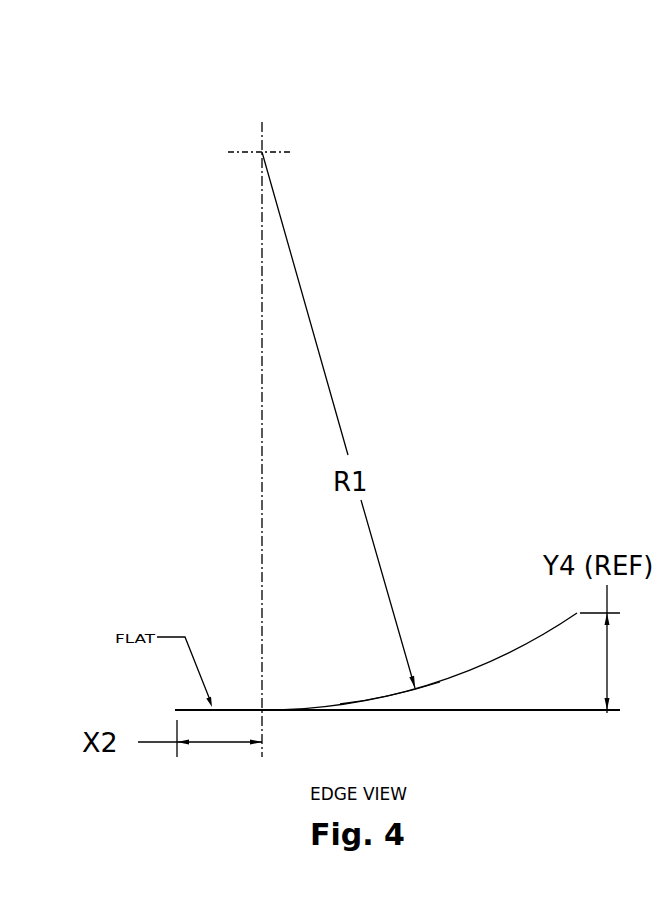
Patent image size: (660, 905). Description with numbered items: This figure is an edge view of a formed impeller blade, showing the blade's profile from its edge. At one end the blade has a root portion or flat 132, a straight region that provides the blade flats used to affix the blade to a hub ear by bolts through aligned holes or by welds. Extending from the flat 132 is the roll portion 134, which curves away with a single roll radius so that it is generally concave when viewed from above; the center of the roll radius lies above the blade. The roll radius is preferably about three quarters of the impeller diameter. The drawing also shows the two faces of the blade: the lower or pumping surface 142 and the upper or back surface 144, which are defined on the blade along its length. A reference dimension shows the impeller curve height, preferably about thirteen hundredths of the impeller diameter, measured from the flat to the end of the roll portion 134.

The flat 132 is at (230, 708).
The roll portion 134 is at (540, 637).
The pumping surface 142 is at (395, 694).
The back surface 144 is at (438, 683).